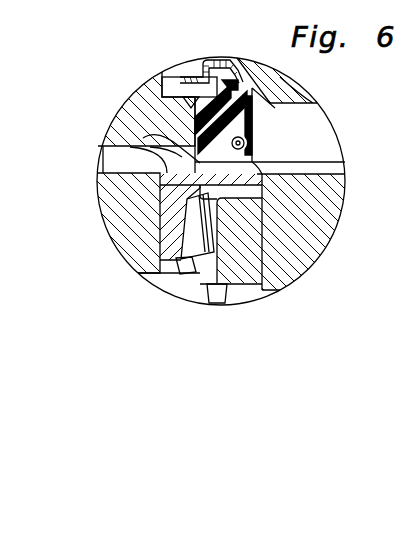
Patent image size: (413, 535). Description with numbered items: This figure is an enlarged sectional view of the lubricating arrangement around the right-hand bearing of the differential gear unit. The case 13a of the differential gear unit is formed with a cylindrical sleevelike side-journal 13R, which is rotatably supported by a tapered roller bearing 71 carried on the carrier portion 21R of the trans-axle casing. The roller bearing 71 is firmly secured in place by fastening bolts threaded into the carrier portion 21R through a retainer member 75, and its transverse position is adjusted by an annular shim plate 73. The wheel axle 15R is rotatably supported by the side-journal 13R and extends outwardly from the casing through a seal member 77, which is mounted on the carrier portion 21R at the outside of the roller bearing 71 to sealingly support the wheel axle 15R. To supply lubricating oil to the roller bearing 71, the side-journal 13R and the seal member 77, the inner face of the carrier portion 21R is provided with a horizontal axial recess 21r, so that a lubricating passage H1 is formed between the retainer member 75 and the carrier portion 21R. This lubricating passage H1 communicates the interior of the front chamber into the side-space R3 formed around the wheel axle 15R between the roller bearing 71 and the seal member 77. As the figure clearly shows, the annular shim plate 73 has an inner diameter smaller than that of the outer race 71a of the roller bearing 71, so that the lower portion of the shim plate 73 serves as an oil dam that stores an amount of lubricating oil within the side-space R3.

The seal member 77 is at (200, 116).
The carrier portion 21R is at (132, 118).
The lubricating passage H1 is at (143, 138).
The axial recess 21r is at (132, 147).
The retainer member 75 is at (120, 215).
The outer race 71a is at (165, 228).
The tapered roller bearing 71 is at (190, 272).
The case 13a is at (262, 232).
The side-journal 13R is at (233, 288).
The annular shim plate 73 is at (262, 178).
The side-space R3 is at (258, 160).
The wheel axle 15R is at (320, 137).